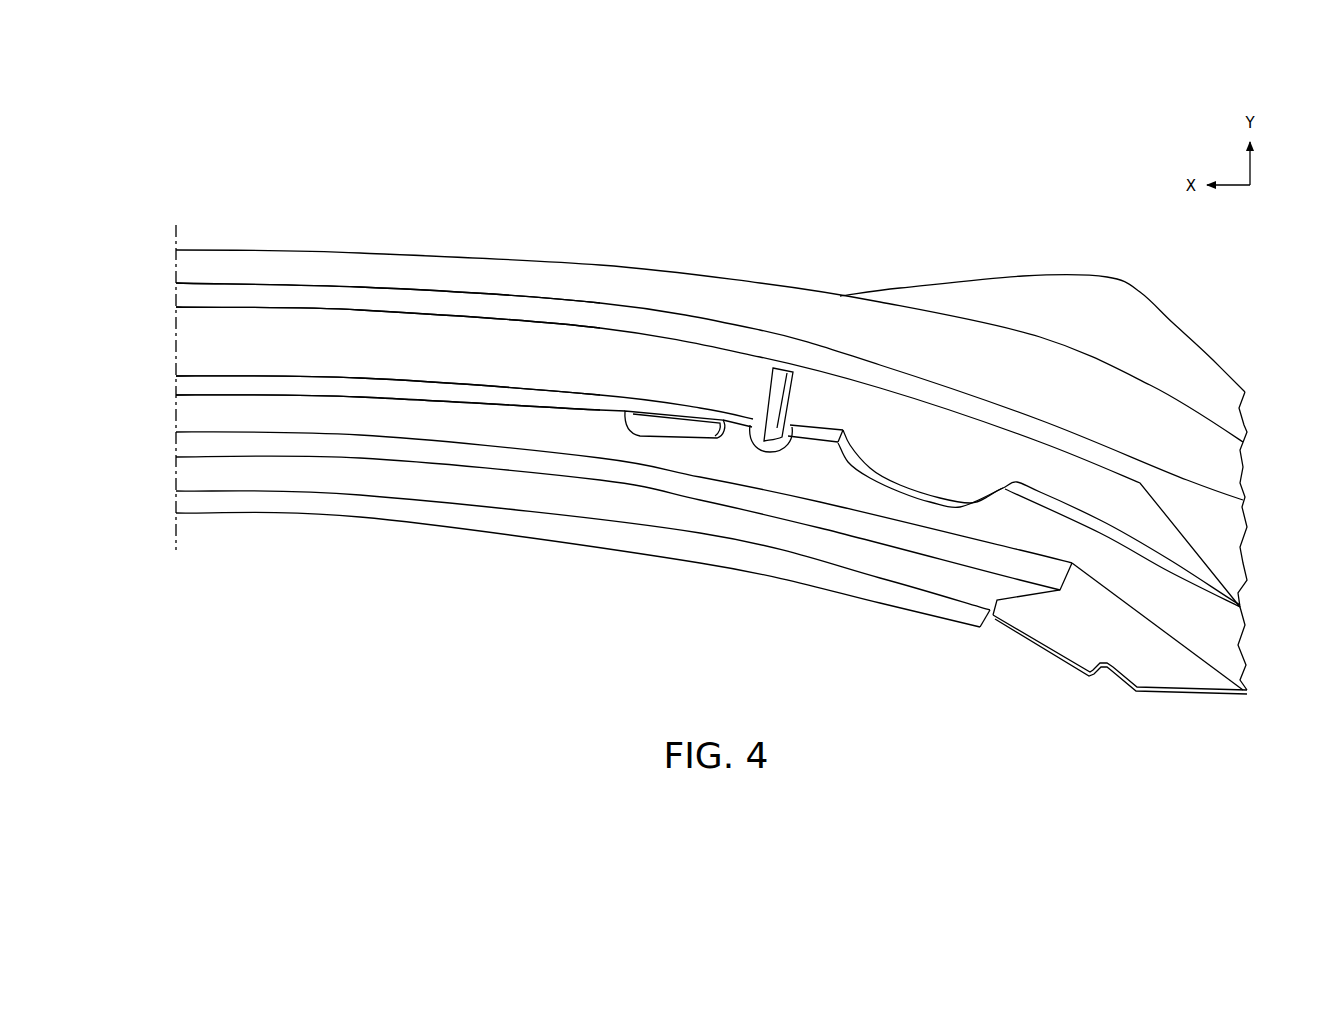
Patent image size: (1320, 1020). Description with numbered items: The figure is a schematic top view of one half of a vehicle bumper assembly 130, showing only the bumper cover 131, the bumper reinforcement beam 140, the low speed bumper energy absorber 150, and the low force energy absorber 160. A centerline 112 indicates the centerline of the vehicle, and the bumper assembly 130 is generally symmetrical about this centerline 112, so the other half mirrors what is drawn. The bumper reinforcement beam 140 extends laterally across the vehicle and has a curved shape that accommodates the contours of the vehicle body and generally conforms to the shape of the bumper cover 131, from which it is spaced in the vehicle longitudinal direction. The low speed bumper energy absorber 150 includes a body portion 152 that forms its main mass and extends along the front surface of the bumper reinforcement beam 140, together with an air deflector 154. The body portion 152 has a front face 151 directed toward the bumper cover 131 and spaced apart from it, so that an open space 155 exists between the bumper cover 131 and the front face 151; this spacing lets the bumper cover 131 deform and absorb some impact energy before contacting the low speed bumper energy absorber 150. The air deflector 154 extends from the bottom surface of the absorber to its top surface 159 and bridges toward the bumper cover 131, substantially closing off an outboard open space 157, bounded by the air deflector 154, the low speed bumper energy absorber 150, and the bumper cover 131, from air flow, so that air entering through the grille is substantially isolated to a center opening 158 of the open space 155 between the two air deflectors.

The centerline 112 is at (177, 227).
The bumper assembly 130 is at (711, 403).
The bumper cover 131 is at (940, 291).
The bumper reinforcement beam 140 is at (711, 592).
The low speed bumper energy absorber 150 is at (509, 470).
The front face 151 is at (188, 389).
The body portion 152 is at (570, 518).
The air deflector 154 is at (788, 345).
The open space 155 is at (663, 434).
The outboard open space 157 is at (1178, 517).
The center opening 158 is at (388, 267).
The top surface 159 is at (178, 404).
The low force energy absorber 160 is at (388, 276).